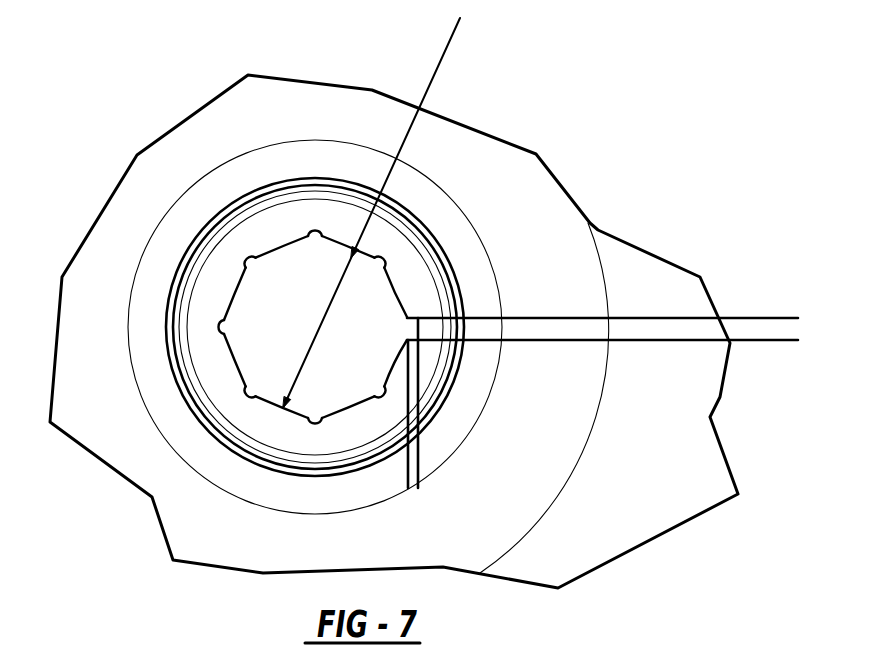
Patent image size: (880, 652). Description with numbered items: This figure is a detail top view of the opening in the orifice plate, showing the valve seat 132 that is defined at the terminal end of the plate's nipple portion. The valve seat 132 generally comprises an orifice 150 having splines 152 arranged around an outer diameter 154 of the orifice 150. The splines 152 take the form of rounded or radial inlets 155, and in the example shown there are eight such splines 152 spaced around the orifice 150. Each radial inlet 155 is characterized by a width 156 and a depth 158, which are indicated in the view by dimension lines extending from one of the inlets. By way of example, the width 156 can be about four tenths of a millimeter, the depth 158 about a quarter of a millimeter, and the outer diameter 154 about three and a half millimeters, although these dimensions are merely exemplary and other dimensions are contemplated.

The valve seat 132 is at (281, 227).
The orifice 150 is at (236, 302).
The splines 152 is at (215, 327).
The outer diameter 154 is at (460, 18).
The radial inlets 155 is at (390, 258).
The width 156 is at (775, 387).
The depth 158 is at (360, 480).